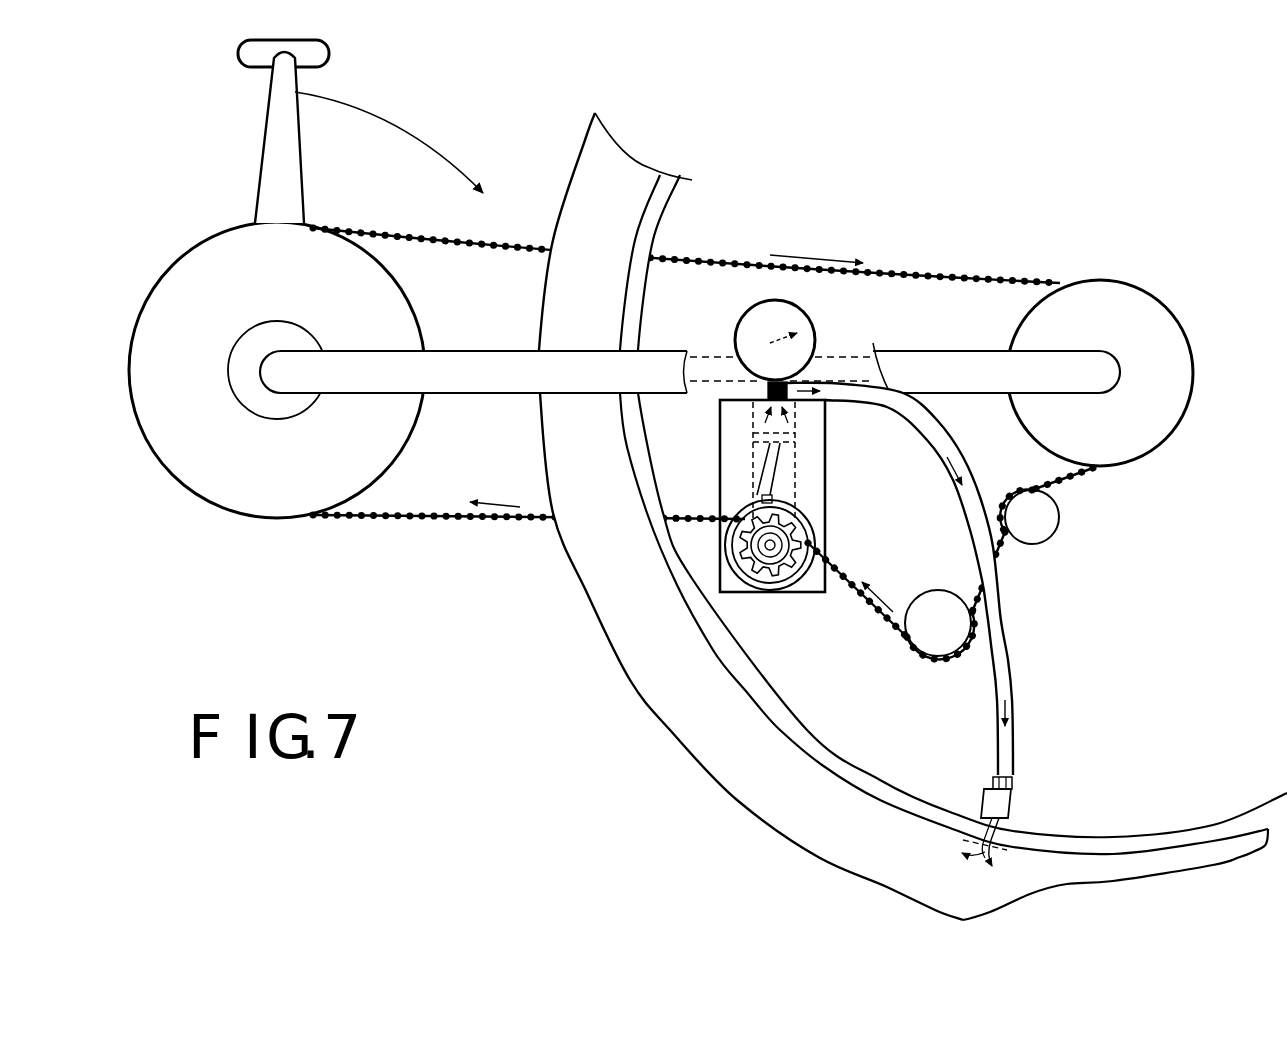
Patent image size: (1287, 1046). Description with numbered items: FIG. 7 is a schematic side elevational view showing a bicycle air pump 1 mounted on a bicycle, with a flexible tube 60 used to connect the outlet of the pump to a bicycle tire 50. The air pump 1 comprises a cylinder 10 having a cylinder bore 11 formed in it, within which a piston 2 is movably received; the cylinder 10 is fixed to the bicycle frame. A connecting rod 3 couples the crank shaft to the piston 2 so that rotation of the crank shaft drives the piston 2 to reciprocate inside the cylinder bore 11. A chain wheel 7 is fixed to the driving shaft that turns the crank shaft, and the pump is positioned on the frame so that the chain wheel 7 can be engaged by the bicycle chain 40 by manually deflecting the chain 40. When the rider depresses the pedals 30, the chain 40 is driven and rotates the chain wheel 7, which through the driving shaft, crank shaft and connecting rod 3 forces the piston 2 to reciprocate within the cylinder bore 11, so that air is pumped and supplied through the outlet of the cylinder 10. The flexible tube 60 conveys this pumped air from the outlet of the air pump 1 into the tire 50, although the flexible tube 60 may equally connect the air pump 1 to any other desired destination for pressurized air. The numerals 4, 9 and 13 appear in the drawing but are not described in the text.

The bicycle air pump 1 is at (747, 607).
The piston 2 is at (785, 440).
The connecting rod 3 is at (777, 477).
The crank ring 4 is at (795, 512).
The chain wheel 7 is at (780, 575).
The cylinder 9 is at (797, 313).
The cylinder 10 is at (813, 423).
The cylinder bore 11 is at (752, 416).
The sprocket 13 is at (793, 552).
The pedals 30 is at (273, 115).
The chain 40 is at (990, 280).
The tire 50 is at (618, 593).
The flexible tube 60 is at (1008, 661).